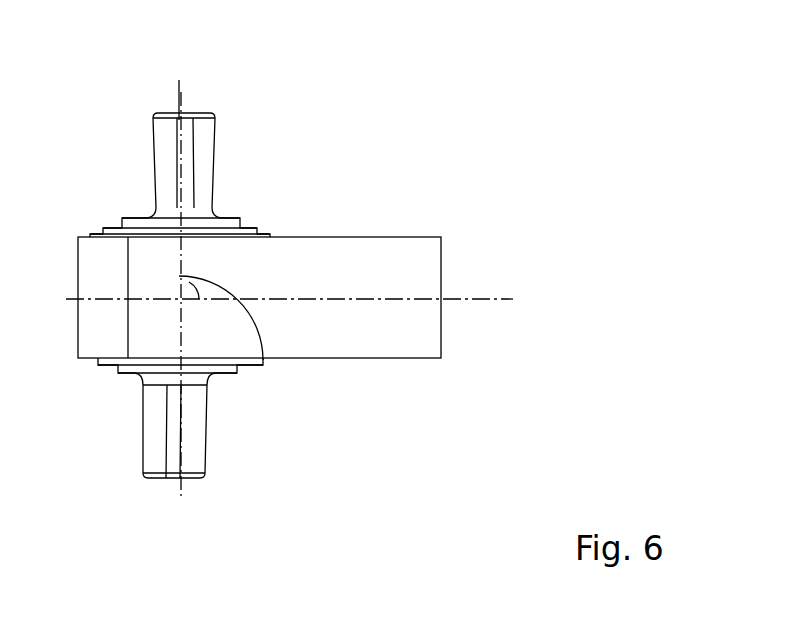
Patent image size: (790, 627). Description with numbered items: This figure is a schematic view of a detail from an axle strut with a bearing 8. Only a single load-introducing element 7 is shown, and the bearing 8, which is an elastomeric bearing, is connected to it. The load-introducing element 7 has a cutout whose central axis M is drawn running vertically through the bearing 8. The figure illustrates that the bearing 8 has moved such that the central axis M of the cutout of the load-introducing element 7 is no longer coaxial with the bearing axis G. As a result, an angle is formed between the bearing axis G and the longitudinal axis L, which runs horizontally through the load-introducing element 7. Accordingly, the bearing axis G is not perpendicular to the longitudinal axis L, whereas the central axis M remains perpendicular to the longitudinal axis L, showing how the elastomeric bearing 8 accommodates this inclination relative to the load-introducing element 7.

The load-introducing element 7 is at (334, 265).
The bearing 8 is at (197, 213).
The central axis M is at (178, 94).
The bearing axis G is at (184, 104).
The longitudinal axis L is at (477, 299).